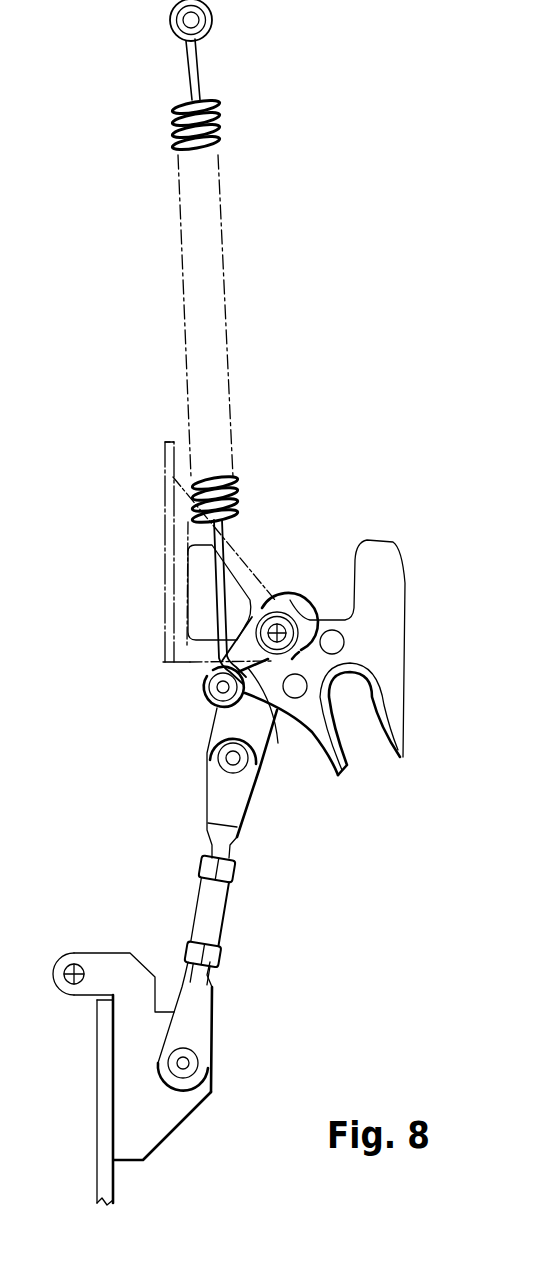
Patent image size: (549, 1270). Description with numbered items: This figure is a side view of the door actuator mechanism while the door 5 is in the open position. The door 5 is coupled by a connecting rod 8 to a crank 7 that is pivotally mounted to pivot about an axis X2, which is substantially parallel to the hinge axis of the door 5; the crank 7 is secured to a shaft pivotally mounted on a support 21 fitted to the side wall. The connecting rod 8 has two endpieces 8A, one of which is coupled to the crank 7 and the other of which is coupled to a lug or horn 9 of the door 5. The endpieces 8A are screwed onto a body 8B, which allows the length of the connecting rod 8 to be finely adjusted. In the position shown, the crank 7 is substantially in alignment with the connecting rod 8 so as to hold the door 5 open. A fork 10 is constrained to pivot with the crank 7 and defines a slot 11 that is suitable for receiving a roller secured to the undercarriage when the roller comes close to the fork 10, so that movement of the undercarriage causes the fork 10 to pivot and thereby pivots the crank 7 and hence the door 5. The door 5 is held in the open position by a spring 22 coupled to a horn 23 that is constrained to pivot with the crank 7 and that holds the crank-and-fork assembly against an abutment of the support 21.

The door 5 is at (102, 1190).
The crank 7 is at (220, 725).
The connecting rod 8 is at (163, 856).
The endpiece 8A is at (215, 795).
The body 8B is at (213, 920).
The horn 9 is at (167, 1128).
The fork 10 is at (394, 666).
The slot 11 is at (363, 752).
The support 21 is at (170, 530).
The spring 22 is at (222, 128).
The horn 23 is at (271, 718).
The axis X2 is at (287, 593).